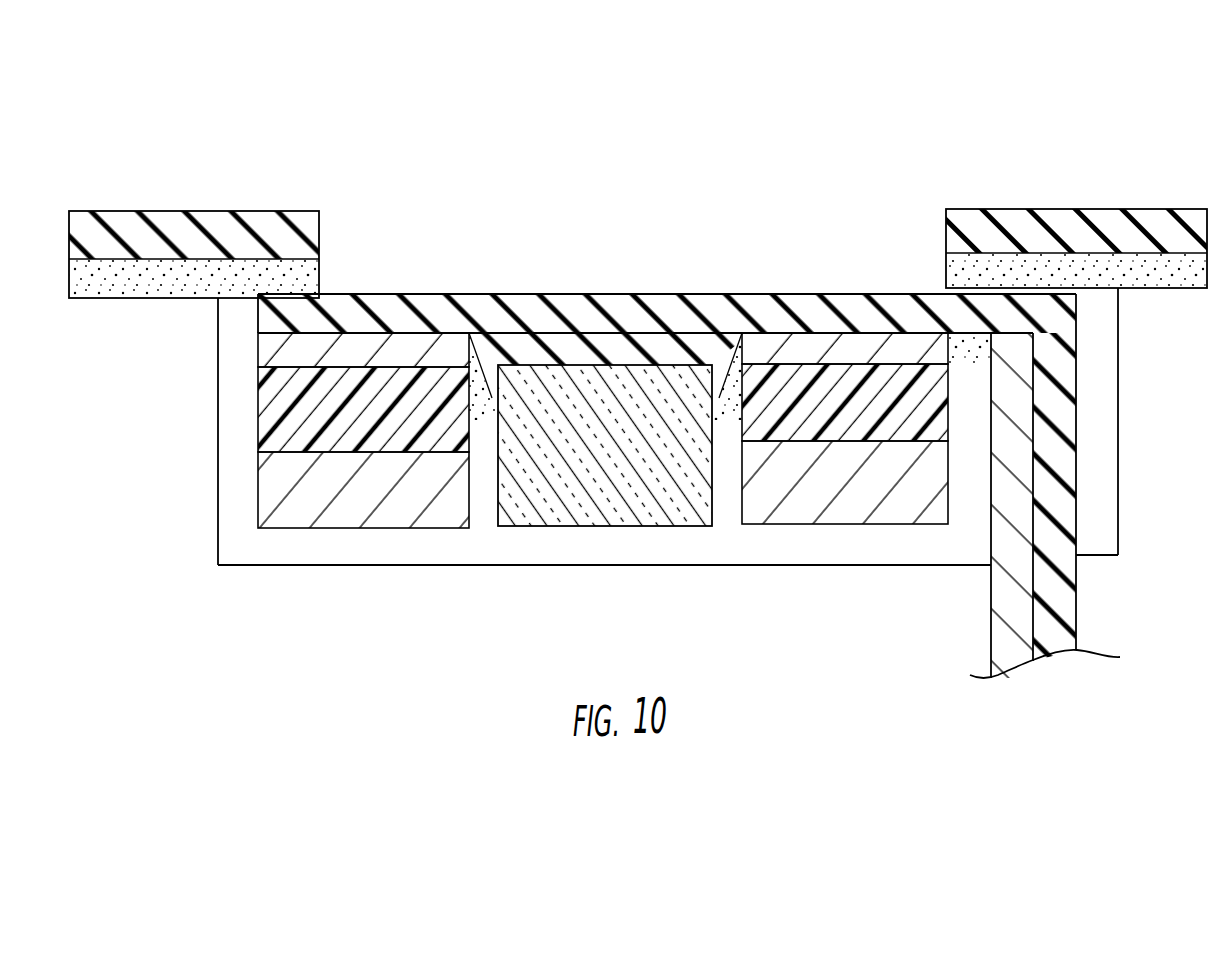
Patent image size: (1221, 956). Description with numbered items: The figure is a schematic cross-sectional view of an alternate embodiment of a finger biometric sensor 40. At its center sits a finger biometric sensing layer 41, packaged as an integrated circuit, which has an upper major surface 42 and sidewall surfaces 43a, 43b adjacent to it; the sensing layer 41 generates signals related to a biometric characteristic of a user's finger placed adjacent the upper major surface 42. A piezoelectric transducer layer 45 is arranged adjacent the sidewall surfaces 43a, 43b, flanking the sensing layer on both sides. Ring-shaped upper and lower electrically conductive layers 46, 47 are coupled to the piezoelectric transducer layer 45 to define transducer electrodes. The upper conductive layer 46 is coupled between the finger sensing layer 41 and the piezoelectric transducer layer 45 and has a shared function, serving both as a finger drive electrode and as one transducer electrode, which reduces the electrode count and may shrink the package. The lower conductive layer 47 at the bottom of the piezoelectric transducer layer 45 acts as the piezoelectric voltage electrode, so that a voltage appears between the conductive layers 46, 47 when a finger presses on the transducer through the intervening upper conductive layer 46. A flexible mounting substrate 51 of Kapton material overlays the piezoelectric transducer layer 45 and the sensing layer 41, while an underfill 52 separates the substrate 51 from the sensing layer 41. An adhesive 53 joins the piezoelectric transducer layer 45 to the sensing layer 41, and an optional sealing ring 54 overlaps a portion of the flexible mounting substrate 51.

The finger biometric sensor 40 is at (277, 102).
The finger biometric sensing layer 41 is at (688, 355).
The upper major surface 42 is at (518, 358).
The sidewall surface 43a is at (498, 477).
The sidewall surface 43b is at (712, 480).
The piezoelectric transducer layer 45 is at (283, 425).
The upper conductive layer 46 is at (277, 357).
The lower conductive layer 47 is at (287, 493).
The flexible mounting substrate 51 is at (898, 305).
The underfill 52 is at (500, 357).
The adhesive 53 is at (855, 540).
The sealing ring 54 is at (145, 230).